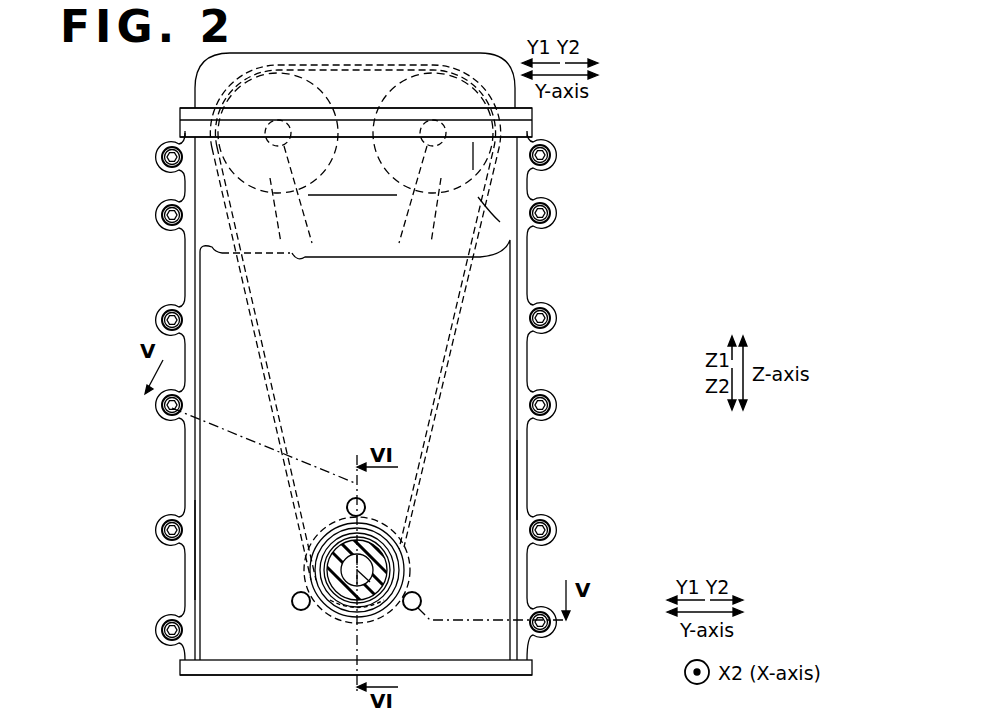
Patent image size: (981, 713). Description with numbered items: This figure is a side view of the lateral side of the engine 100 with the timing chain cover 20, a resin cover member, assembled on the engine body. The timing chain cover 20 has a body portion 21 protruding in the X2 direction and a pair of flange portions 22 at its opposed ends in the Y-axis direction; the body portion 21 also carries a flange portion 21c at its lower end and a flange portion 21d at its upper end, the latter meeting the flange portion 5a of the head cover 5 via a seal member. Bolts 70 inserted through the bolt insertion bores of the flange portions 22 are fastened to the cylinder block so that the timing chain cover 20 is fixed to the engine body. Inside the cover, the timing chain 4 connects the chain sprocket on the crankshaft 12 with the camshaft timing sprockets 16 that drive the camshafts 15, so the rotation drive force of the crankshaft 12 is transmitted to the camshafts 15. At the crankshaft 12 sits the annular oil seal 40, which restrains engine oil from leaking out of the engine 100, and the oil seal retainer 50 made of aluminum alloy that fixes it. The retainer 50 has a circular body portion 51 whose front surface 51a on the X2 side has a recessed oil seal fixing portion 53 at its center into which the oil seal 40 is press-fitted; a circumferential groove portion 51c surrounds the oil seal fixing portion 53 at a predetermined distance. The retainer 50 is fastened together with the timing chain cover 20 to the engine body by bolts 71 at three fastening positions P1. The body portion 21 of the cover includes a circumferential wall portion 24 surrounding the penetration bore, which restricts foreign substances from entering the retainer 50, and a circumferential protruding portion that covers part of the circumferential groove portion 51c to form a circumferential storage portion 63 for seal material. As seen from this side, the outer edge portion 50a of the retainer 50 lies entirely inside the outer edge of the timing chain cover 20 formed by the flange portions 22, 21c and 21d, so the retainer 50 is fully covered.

The engine 100 is at (54, 96).
The head cover 5 is at (220, 84).
The flange portion 5a is at (530, 112).
The body portion 21 is at (493, 365).
The timing chain cover 20 is at (425, 391).
The flange portion 21d is at (524, 128).
The flange portion 21c is at (522, 667).
The flange portions 22 is at (190, 590).
The bolts 70 is at (158, 160).
The camshafts 15 is at (359, 185).
The camshaft timing sprockets 16 is at (355, 238).
The timing chain 4 is at (270, 360).
The crankshaft 12 is at (360, 548).
The bolts 71 is at (348, 500).
The fastening positions P1 is at (343, 509).
The circumferential storage portion 63 is at (415, 546).
The circumferential groove portion 51c is at (400, 525).
The circumferential wall portion 24 is at (403, 548).
The outer edge portion 50a is at (410, 567).
The oil seal retainer 50 is at (407, 570).
The body portion 51 is at (403, 584).
The front surface 51a is at (395, 605).
The oil seal fixing portion 53 is at (335, 612).
The oil seal 40 is at (352, 610).